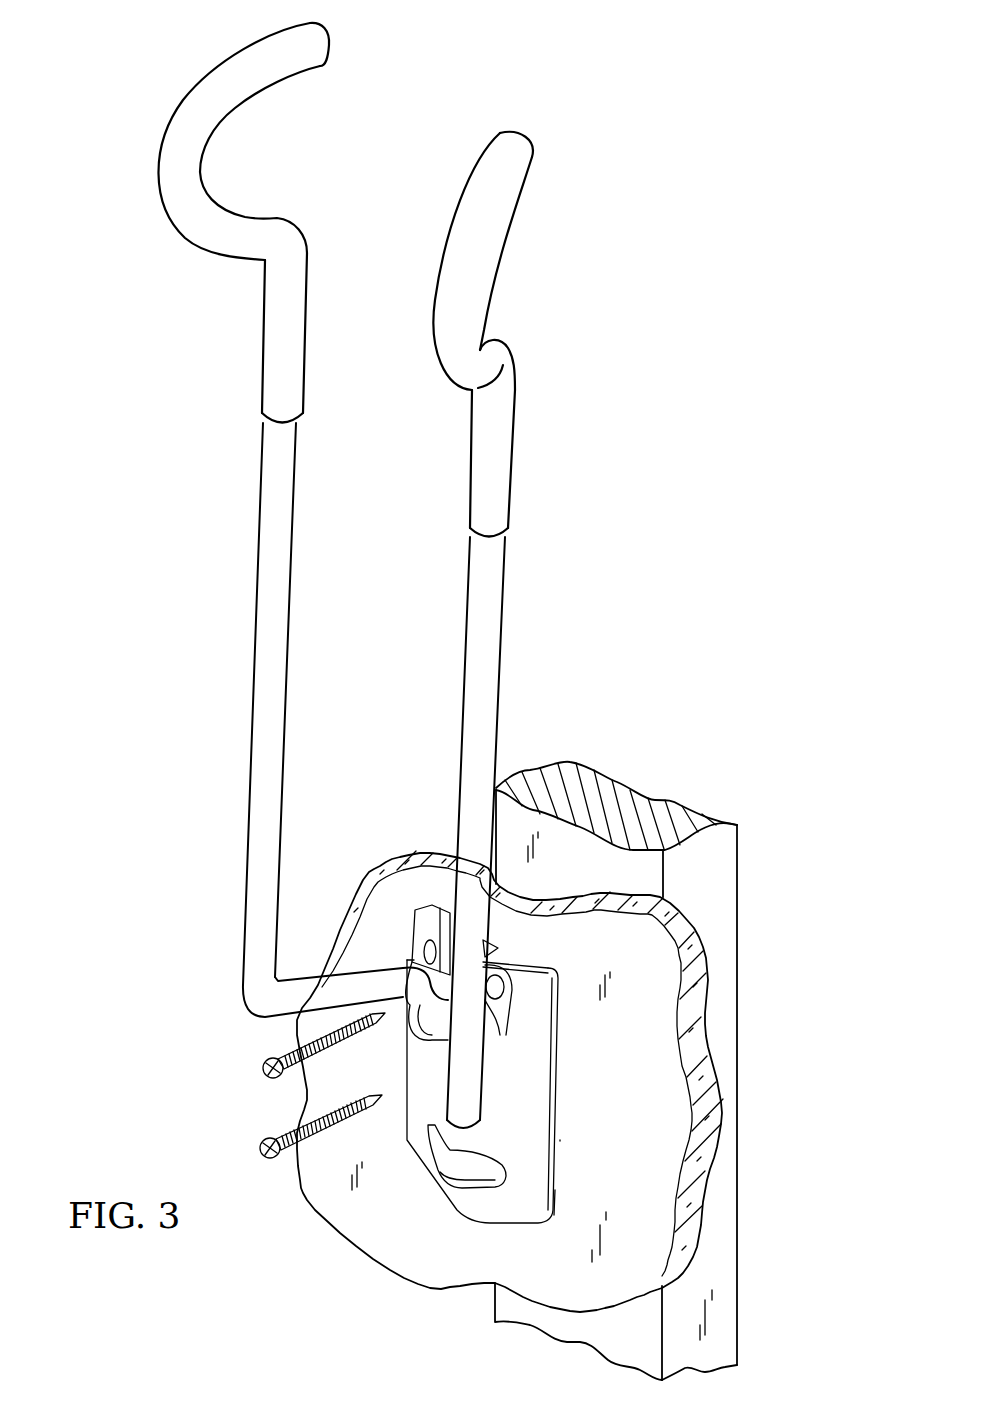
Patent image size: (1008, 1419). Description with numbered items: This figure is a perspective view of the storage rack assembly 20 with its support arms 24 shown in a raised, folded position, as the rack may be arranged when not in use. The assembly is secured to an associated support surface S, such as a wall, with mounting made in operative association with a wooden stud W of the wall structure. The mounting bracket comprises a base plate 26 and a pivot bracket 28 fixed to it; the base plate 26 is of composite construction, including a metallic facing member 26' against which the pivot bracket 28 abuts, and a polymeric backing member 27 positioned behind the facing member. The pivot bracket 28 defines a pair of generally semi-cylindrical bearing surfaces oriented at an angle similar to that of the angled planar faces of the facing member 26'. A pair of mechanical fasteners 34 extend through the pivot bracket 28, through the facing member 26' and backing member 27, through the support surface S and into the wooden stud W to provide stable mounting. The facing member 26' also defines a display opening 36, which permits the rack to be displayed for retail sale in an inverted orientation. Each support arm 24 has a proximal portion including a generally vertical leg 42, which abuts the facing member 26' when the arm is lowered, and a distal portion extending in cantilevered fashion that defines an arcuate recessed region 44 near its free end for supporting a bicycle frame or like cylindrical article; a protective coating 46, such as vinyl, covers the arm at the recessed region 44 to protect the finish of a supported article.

The storage rack assembly 20 is at (577, 970).
The support arm 24 is at (285, 712).
The base plate 26 is at (516, 1091).
The facing member 26' is at (580, 1184).
The backing member 27 is at (528, 962).
The pivot bracket 28 is at (415, 967).
The mechanical fasteners 34 is at (280, 1088).
The display opening 36 is at (452, 1190).
The vertical leg 42 is at (303, 988).
The recessed region 44 is at (210, 178).
The protective coating 46 is at (268, 378).
The wooden stud W is at (737, 860).
The support surface S is at (635, 1248).